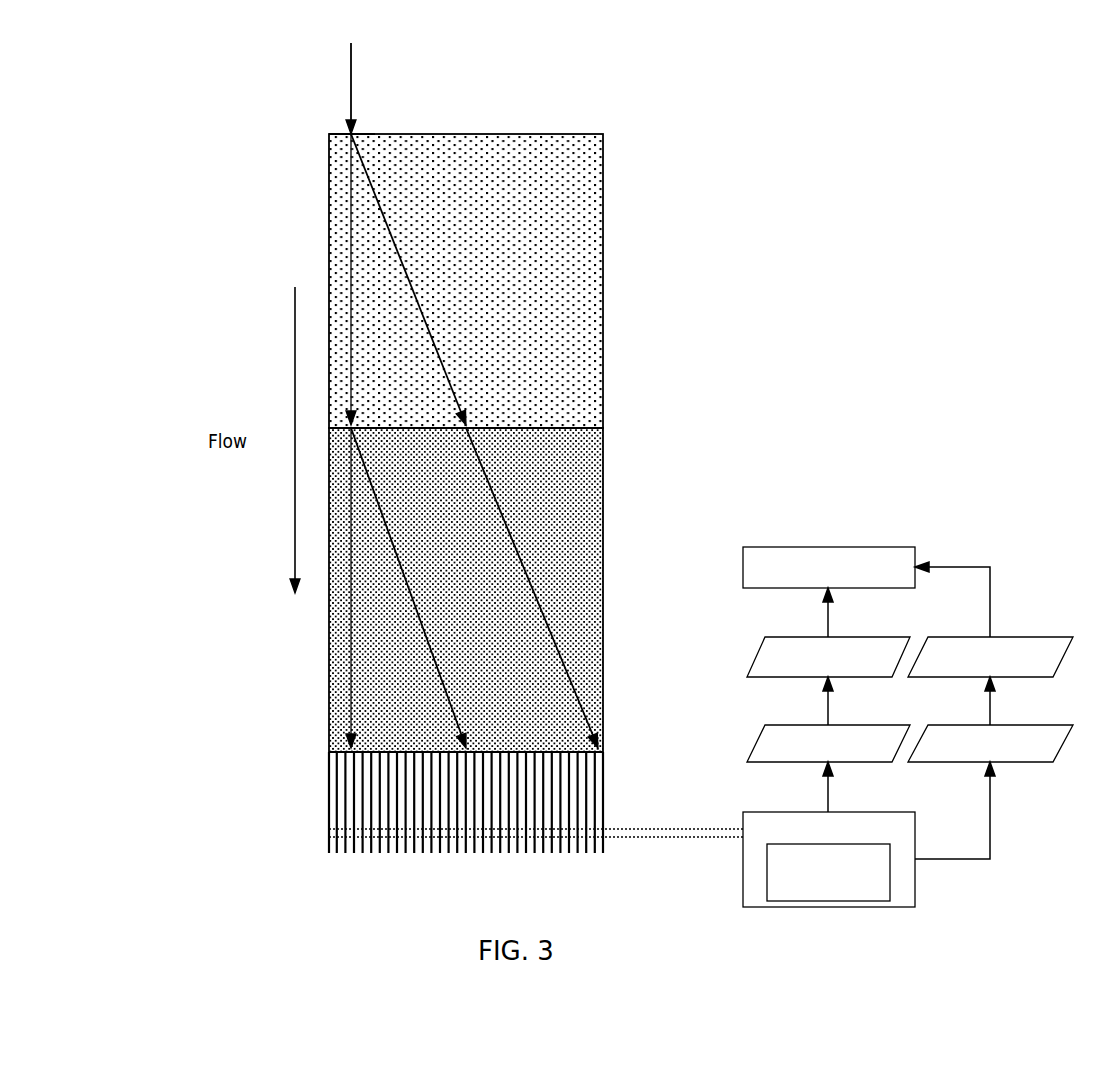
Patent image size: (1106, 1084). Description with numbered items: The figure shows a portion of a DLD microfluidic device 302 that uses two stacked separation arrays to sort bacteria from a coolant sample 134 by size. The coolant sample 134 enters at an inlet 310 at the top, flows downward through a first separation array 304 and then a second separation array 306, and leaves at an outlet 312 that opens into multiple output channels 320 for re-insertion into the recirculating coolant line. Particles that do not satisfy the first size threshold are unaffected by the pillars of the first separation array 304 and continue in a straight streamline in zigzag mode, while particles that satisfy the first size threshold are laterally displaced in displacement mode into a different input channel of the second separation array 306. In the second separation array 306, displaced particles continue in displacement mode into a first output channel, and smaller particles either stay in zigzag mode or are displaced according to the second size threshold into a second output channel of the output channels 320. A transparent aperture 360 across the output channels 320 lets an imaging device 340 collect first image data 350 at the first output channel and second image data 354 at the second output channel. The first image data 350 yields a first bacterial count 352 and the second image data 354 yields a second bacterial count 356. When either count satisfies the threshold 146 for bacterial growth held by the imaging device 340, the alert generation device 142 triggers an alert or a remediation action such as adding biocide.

The DLD microfluidic device 302 is at (998, 98).
The coolant sample 134 is at (449, 88).
The inlet 310 is at (309, 135).
The first separation array 304 is at (858, 428).
The second separation array 306 is at (574, 590).
The outlet 312 is at (420, 750).
The output channels 320 is at (466, 822).
The transparent aperture 360 is at (608, 820).
The alert generation device 142 is at (829, 567).
The first bacterial count 352 is at (828, 657).
The second bacterial count 356 is at (990, 657).
The first image data 350 is at (828, 743).
The second image data 354 is at (990, 743).
The imaging device 340 is at (829, 859).
The threshold for bacterial growth 146 is at (828, 872).